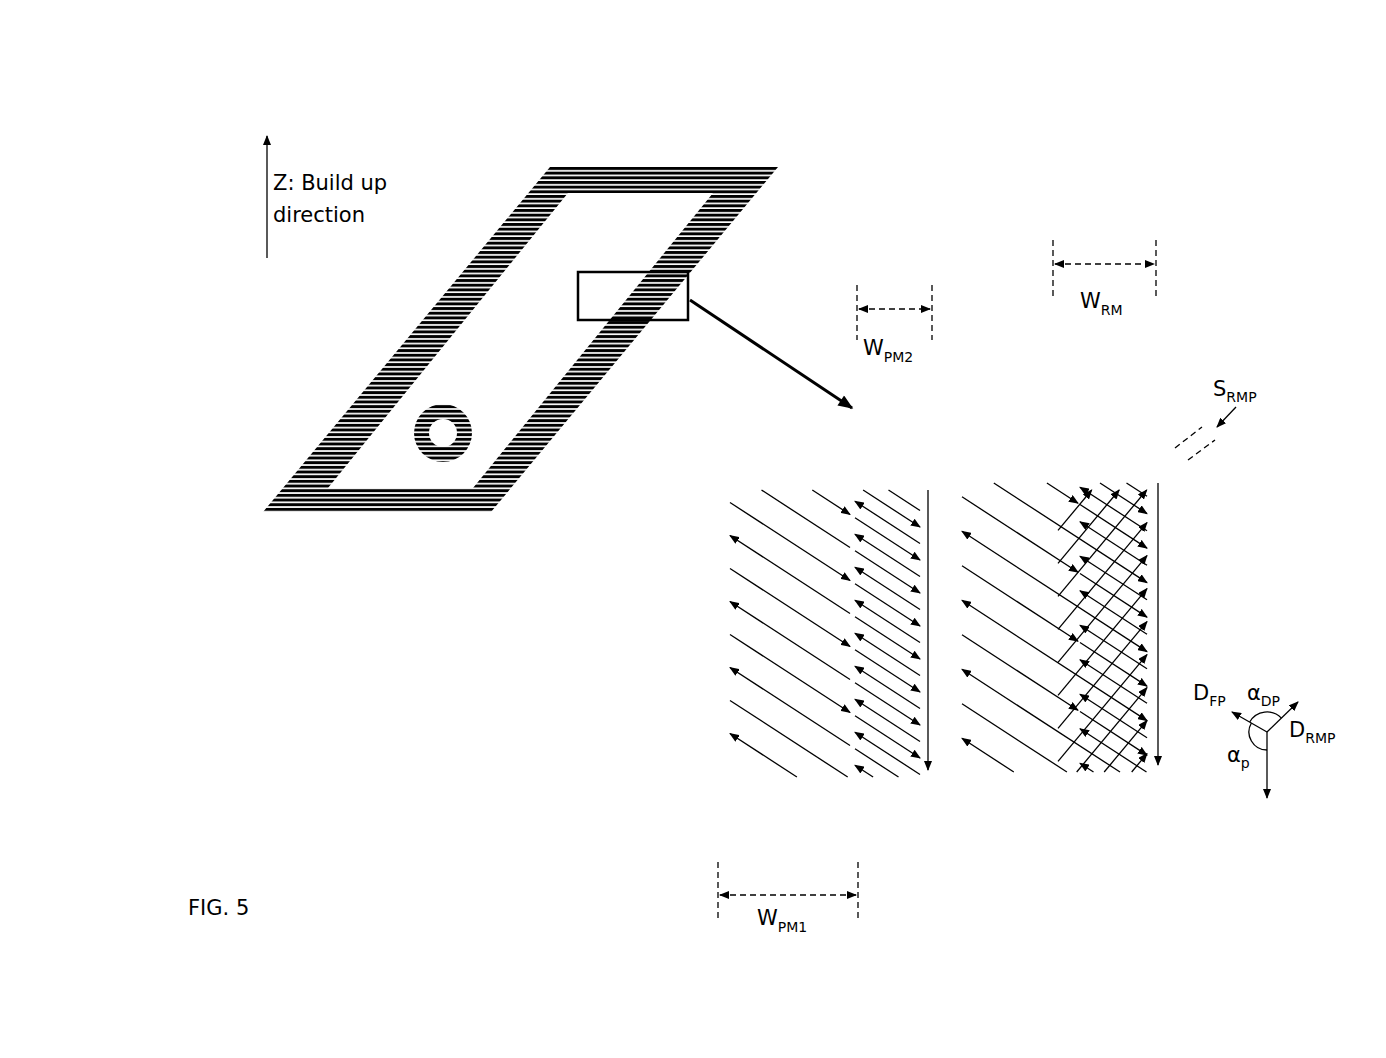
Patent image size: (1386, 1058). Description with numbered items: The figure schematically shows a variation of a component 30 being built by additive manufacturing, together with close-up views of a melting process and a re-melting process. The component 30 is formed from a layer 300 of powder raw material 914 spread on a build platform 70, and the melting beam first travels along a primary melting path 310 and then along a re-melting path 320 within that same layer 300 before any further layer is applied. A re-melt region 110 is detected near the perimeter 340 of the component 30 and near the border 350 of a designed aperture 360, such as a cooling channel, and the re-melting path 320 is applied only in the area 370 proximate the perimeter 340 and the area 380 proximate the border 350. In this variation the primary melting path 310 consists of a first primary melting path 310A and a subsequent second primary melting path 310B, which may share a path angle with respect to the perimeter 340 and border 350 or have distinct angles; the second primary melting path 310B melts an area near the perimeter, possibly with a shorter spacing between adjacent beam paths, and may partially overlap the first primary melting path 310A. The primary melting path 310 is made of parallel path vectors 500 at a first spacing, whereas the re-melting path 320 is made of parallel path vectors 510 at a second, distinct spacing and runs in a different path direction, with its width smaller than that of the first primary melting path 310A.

The component 30 is at (423, 83).
The raw material 914 is at (630, 215).
The re-melt region 110 is at (898, 783).
The area proximate perimeter 370 is at (512, 202).
The build platform 70 is at (375, 352).
The area proximate border 380 is at (465, 398).
The border 350 is at (473, 433).
The designed aperture 360 is at (445, 430).
The primary melting path 310 is at (975, 780).
The first primary melting path 310A is at (718, 503).
The second primary melting path 310B is at (912, 457).
The parallel path vectors 500 is at (747, 583).
The layer 300 is at (823, 809).
The parallel path vectors 510 is at (1062, 512).
The perimeter 340 is at (1159, 578).
The re-melting path 320 is at (1063, 782).